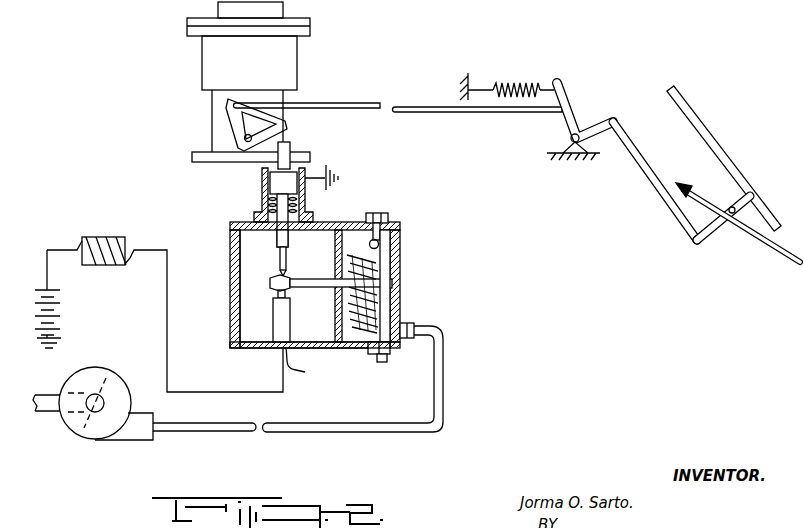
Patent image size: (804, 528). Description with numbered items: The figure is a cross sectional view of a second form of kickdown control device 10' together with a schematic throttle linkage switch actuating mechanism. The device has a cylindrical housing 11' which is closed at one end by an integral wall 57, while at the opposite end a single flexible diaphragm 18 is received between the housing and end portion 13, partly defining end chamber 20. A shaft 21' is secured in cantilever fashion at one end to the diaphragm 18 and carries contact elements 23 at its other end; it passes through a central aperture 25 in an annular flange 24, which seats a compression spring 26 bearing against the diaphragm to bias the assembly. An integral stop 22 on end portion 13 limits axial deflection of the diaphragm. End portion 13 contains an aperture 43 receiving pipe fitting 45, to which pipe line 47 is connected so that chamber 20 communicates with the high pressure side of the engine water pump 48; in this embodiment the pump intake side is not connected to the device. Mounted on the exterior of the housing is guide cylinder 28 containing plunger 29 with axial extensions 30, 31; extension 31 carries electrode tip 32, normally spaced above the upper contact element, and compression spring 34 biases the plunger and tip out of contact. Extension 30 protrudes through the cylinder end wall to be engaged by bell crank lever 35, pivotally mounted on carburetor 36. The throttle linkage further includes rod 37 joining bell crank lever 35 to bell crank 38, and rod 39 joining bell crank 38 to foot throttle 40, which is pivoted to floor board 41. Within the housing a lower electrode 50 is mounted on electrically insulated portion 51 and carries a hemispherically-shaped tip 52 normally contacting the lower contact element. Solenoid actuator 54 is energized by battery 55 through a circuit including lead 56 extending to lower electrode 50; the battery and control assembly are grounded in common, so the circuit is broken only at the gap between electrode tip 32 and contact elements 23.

The carburetor 36 is at (200, 65).
The bell crank lever 35 is at (288, 126).
The axial extension 30 is at (291, 149).
The plunger 29 is at (268, 183).
The guide cylinder 28 is at (265, 202).
The compression spring 34 is at (302, 214).
The kickdown control device 10' is at (345, 285).
The end portion 13 is at (400, 302).
The annular flange 24 is at (336, 240).
The integral wall 57 is at (230, 278).
The axial extension 31 is at (279, 238).
The electrode tip 32 is at (281, 258).
The contact elements 23 is at (291, 279).
The shaft 21' is at (331, 289).
The central aperture 25 is at (298, 307).
The lower electrode 50 is at (273, 322).
The hemispherically-shaped tip 52 is at (277, 294).
The cylindrical housing 11' is at (387, 221).
The compression spring 26 is at (392, 246).
The integral stop 22 is at (400, 287).
The end chamber 20 is at (378, 358).
The aperture 43 is at (390, 352).
The pipe fitting 45 is at (415, 329).
The pipe line 47 is at (347, 433).
The flexible diaphragm 18 is at (320, 348).
The electrically insulated portion 51 is at (305, 369).
The lead 56 is at (228, 392).
The solenoid actuator 54 is at (100, 268).
The battery 55 is at (66, 318).
The engine water pump 48 is at (120, 437).
The rod 37 is at (440, 114).
The bell crank 38 is at (582, 118).
The rod 39 is at (657, 181).
The foot throttle 40 is at (726, 233).
The floor board 41 is at (788, 256).